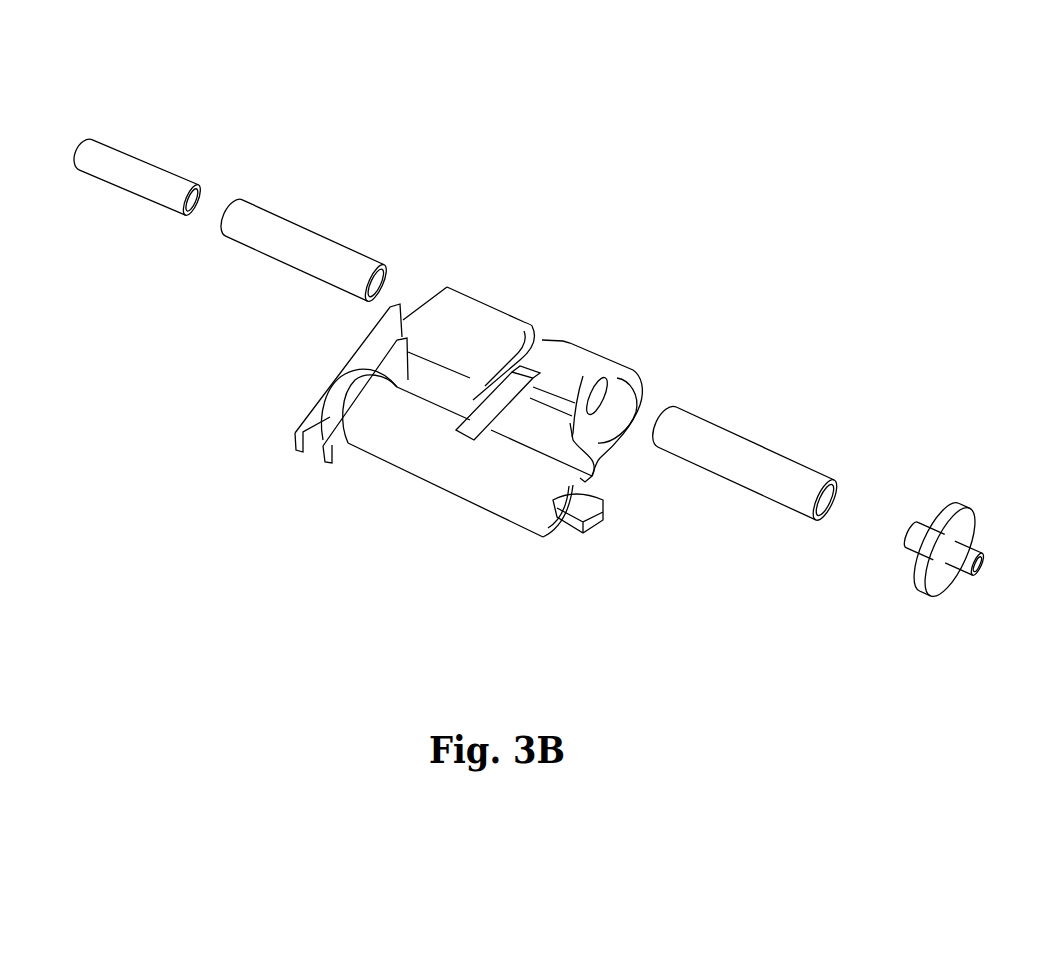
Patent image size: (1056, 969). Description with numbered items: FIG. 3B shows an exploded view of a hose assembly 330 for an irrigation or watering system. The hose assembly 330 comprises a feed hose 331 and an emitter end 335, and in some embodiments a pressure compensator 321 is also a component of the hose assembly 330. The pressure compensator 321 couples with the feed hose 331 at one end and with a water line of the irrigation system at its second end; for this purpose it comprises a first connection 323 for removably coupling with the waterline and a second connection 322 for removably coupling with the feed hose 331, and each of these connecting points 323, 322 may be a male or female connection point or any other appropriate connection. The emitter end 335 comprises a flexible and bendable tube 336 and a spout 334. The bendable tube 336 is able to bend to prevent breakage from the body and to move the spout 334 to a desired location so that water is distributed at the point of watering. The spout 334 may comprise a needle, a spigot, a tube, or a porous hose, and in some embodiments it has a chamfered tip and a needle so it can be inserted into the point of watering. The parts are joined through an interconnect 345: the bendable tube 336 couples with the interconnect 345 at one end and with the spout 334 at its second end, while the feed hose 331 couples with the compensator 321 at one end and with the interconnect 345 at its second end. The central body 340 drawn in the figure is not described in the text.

The hose assembly 330 is at (791, 98).
The pressure compensator 321 is at (952, 506).
The second connection 322 is at (917, 530).
The first connection 323 is at (973, 557).
The feed hose 331 is at (748, 450).
The spout 334 is at (139, 165).
The emitter end 335 is at (368, 317).
The bendable tube 336 is at (314, 240).
The body 340 is at (347, 431).
The interconnect 345 is at (510, 300).